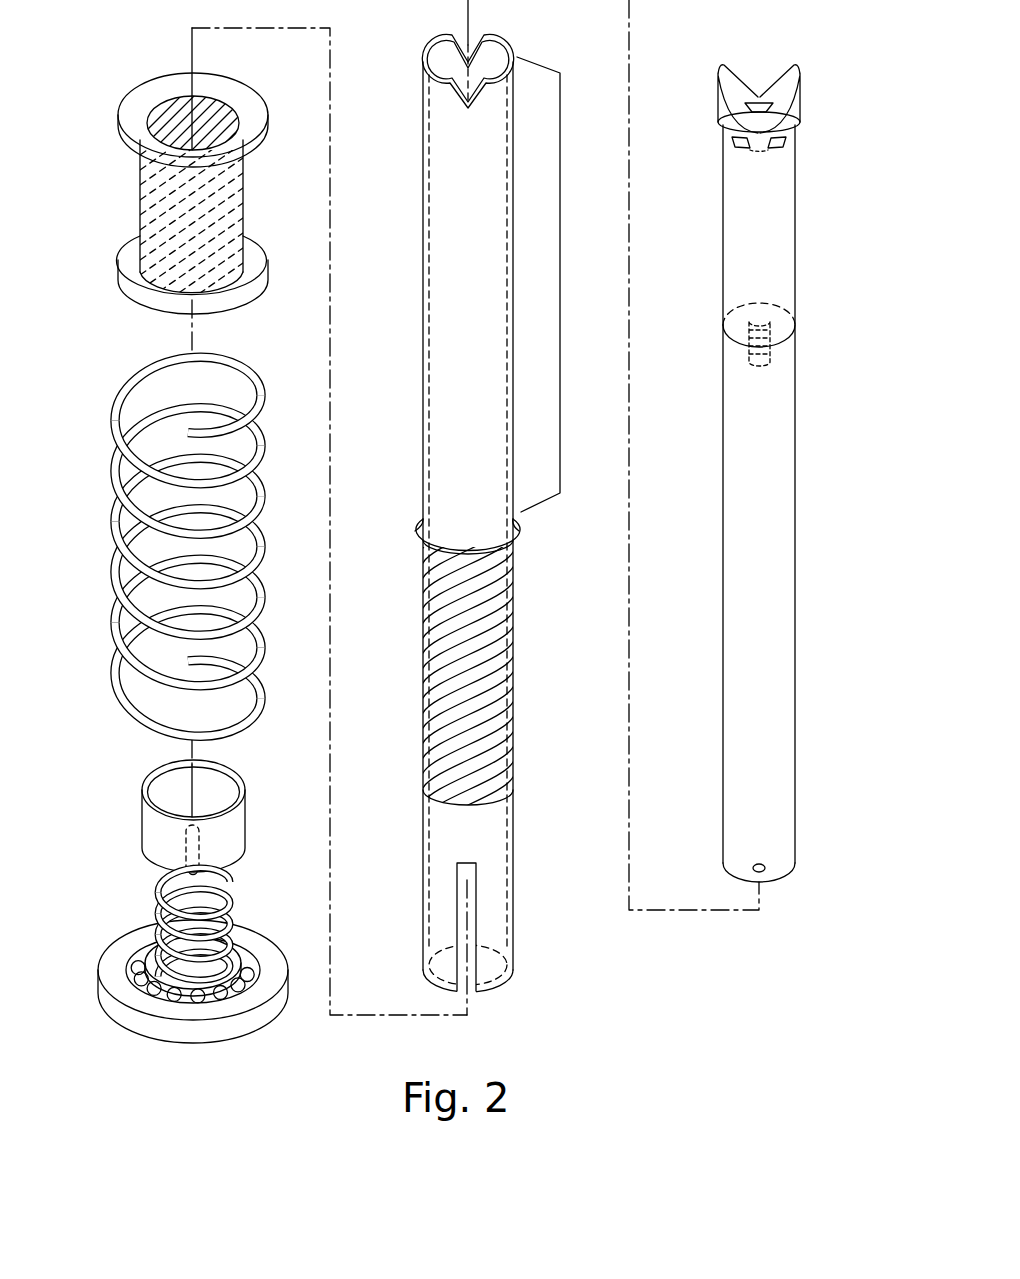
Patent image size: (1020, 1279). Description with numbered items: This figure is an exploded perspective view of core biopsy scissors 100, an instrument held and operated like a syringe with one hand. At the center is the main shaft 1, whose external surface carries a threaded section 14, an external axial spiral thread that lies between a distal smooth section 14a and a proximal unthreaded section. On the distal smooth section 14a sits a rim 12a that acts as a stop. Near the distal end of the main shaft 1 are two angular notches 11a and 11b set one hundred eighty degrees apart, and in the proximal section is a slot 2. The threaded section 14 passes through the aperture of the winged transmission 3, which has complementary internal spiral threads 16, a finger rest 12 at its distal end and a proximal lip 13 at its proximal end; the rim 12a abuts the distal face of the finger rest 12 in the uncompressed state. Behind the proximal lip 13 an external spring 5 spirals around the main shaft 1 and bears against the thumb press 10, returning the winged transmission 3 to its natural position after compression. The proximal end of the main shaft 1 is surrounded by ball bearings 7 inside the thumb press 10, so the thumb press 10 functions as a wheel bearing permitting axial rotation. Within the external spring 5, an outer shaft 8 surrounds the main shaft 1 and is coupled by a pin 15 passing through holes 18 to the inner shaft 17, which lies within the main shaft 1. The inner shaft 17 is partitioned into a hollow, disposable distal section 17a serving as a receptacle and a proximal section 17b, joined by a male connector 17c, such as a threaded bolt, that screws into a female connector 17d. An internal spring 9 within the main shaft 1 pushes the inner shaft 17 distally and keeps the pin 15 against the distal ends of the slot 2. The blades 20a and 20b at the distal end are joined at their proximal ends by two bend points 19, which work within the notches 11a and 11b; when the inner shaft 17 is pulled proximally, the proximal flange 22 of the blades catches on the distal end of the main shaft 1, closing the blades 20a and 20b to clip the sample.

The core biopsy scissors 100 is at (343, 1060).
The finger rest 12 is at (118, 112).
The internal spiral threads 16 is at (170, 108).
The winged transmission 3 is at (140, 212).
The proximal lip 13 is at (118, 270).
The external spring 5 is at (118, 460).
The outer shaft 8 is at (142, 805).
The pin 15 is at (150, 862).
The internal spring 9 is at (158, 915).
The ball bearings 7 is at (135, 975).
The thumb press 10 is at (122, 1030).
The main shaft 1 is at (437, 250).
The angular notch 11b is at (450, 52).
The angular notch 11a is at (453, 96).
The distal smooth section 14a is at (560, 280).
The rim 12a is at (420, 522).
The threaded section 14 is at (500, 638).
The slot 2 is at (478, 920).
The inner shaft 17 is at (803, 905).
The distal section 17a is at (782, 266).
The proximal section 17b is at (782, 568).
The blade 20b is at (718, 90).
The blade 20a is at (803, 80).
The bend points 19 is at (772, 104).
The proximal flange 22 is at (738, 132).
The male connector 17c is at (748, 353).
The female connector 17d is at (770, 360).
The holes 18 is at (768, 868).